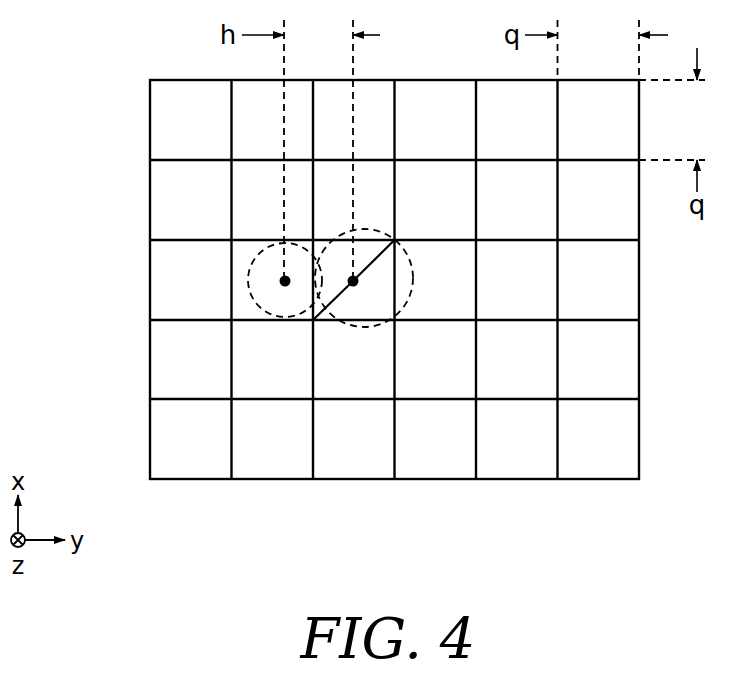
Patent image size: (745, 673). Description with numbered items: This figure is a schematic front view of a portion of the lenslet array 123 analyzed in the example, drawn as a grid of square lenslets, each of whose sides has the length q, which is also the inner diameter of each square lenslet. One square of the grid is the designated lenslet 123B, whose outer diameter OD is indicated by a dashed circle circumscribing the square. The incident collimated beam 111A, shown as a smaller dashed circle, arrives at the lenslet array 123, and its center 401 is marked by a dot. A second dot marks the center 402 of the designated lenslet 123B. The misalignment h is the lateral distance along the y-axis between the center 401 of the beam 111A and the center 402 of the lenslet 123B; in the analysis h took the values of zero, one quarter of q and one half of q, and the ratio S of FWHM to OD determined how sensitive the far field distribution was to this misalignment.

The lenslet array 123 is at (170, 92).
The designated lenslet 123B is at (370, 307).
The center of incident collimated beam 401 is at (285, 281).
The center of designated lenslet 402 is at (353, 281).
The incident collimated beam 111A is at (262, 307).
The outer diameter of lenslet OD is at (337, 300).